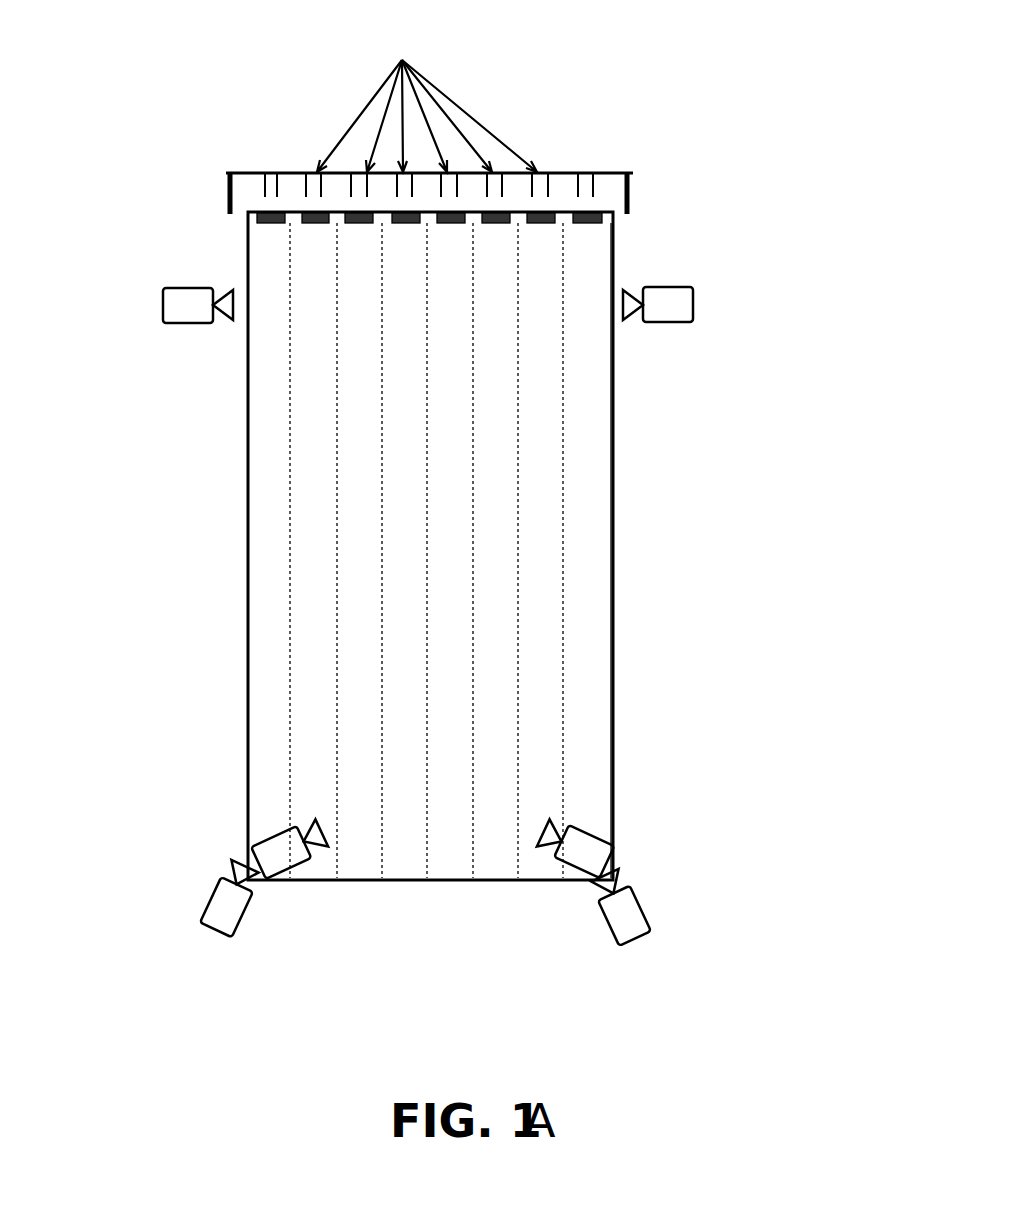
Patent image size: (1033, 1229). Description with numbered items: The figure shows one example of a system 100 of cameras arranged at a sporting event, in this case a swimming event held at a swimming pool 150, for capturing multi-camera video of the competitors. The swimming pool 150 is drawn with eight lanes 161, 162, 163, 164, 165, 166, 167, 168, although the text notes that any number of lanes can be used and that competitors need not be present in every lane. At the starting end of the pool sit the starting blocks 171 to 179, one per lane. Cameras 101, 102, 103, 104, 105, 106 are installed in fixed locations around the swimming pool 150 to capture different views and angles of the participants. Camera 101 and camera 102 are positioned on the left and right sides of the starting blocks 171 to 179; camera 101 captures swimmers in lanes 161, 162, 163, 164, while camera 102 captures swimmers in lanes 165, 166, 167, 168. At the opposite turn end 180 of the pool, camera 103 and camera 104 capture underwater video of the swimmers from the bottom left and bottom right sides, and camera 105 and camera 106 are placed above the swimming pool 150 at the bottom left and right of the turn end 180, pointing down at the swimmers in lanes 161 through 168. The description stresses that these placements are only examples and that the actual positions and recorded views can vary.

The system 100 is at (716, 58).
The camera 101 is at (161, 305).
The camera 102 is at (693, 305).
The camera 103 is at (257, 858).
The camera 104 is at (614, 845).
The camera 105 is at (208, 914).
The camera 106 is at (652, 924).
The swimming pool 150 is at (630, 173).
The lane 161 is at (245, 402).
The lane 162 is at (295, 445).
The lane 163 is at (343, 505).
The lane 164 is at (390, 561).
The lane 165 is at (465, 604).
The lane 166 is at (509, 515).
The lane 167 is at (556, 461).
The lane 168 is at (597, 420).
The starting block 171 is at (285, 163).
The starting block 179 is at (569, 159).
The turn end 180 is at (341, 905).